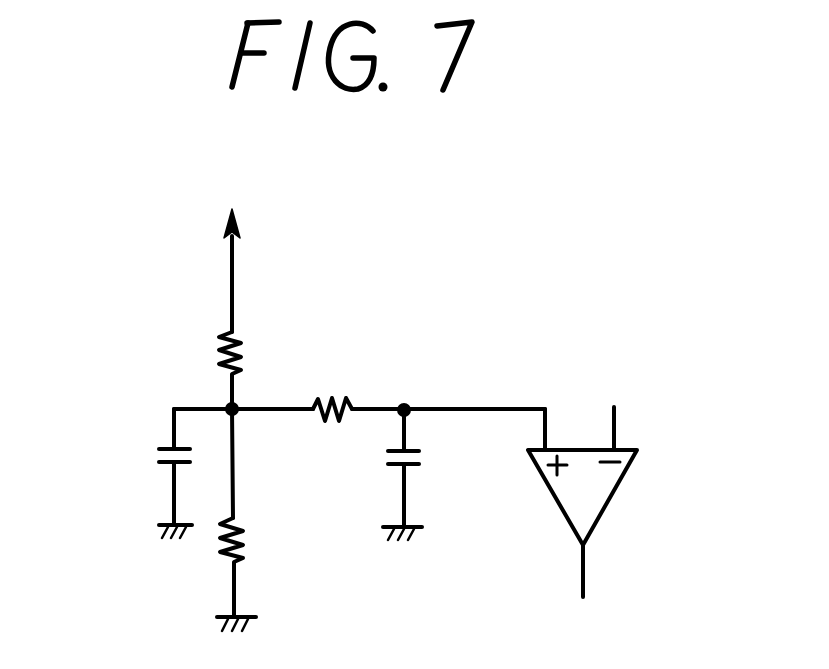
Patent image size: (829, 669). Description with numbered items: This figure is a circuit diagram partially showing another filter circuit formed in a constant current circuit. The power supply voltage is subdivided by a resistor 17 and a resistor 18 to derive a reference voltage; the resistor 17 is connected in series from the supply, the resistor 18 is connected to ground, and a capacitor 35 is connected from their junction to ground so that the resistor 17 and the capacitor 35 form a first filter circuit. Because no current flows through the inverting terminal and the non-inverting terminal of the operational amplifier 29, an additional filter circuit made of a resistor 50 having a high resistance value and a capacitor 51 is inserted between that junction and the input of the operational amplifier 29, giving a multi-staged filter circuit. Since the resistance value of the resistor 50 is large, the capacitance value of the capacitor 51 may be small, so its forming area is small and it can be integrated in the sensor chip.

The resistor 17 is at (246, 348).
The resistor 18 is at (248, 545).
The operational amplifier 29 is at (610, 500).
The capacitor 35 is at (156, 455).
The resistor 50 is at (332, 393).
The capacitor 51 is at (421, 462).